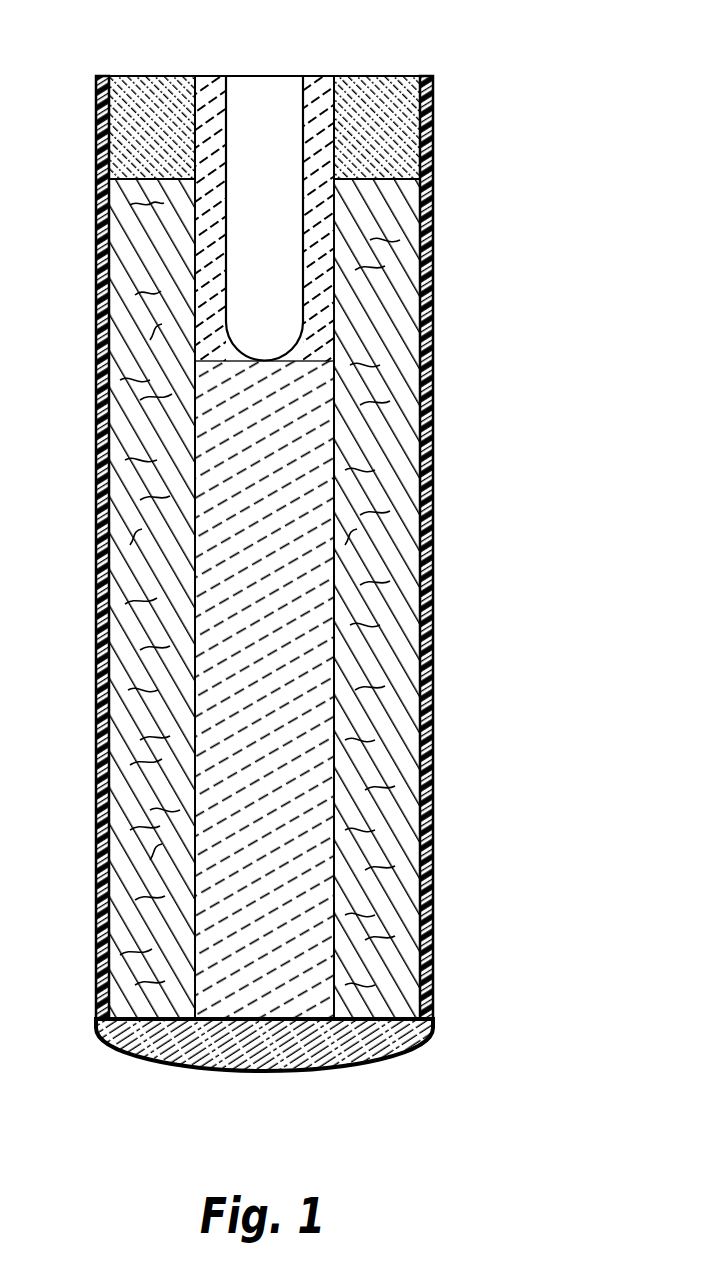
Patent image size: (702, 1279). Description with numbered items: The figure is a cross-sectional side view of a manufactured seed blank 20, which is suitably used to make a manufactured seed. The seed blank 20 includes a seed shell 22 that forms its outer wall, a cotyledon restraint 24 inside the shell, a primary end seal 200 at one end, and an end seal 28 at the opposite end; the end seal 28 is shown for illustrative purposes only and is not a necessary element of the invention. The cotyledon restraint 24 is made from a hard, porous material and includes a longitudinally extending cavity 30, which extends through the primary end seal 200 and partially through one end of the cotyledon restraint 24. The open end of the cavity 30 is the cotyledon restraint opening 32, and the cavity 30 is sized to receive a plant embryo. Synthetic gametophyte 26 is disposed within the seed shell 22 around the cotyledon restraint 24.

The seed blank 20 is at (532, 250).
The seed shell 22 is at (434, 577).
The cotyledon restraint 24 is at (188, 633).
The synthetic gametophyte 26 is at (130, 431).
The end seal 28 is at (380, 1055).
The cavity 30 is at (226, 137).
The cotyledon restraint opening 32 is at (302, 93).
The primary end seal 200 is at (140, 84).